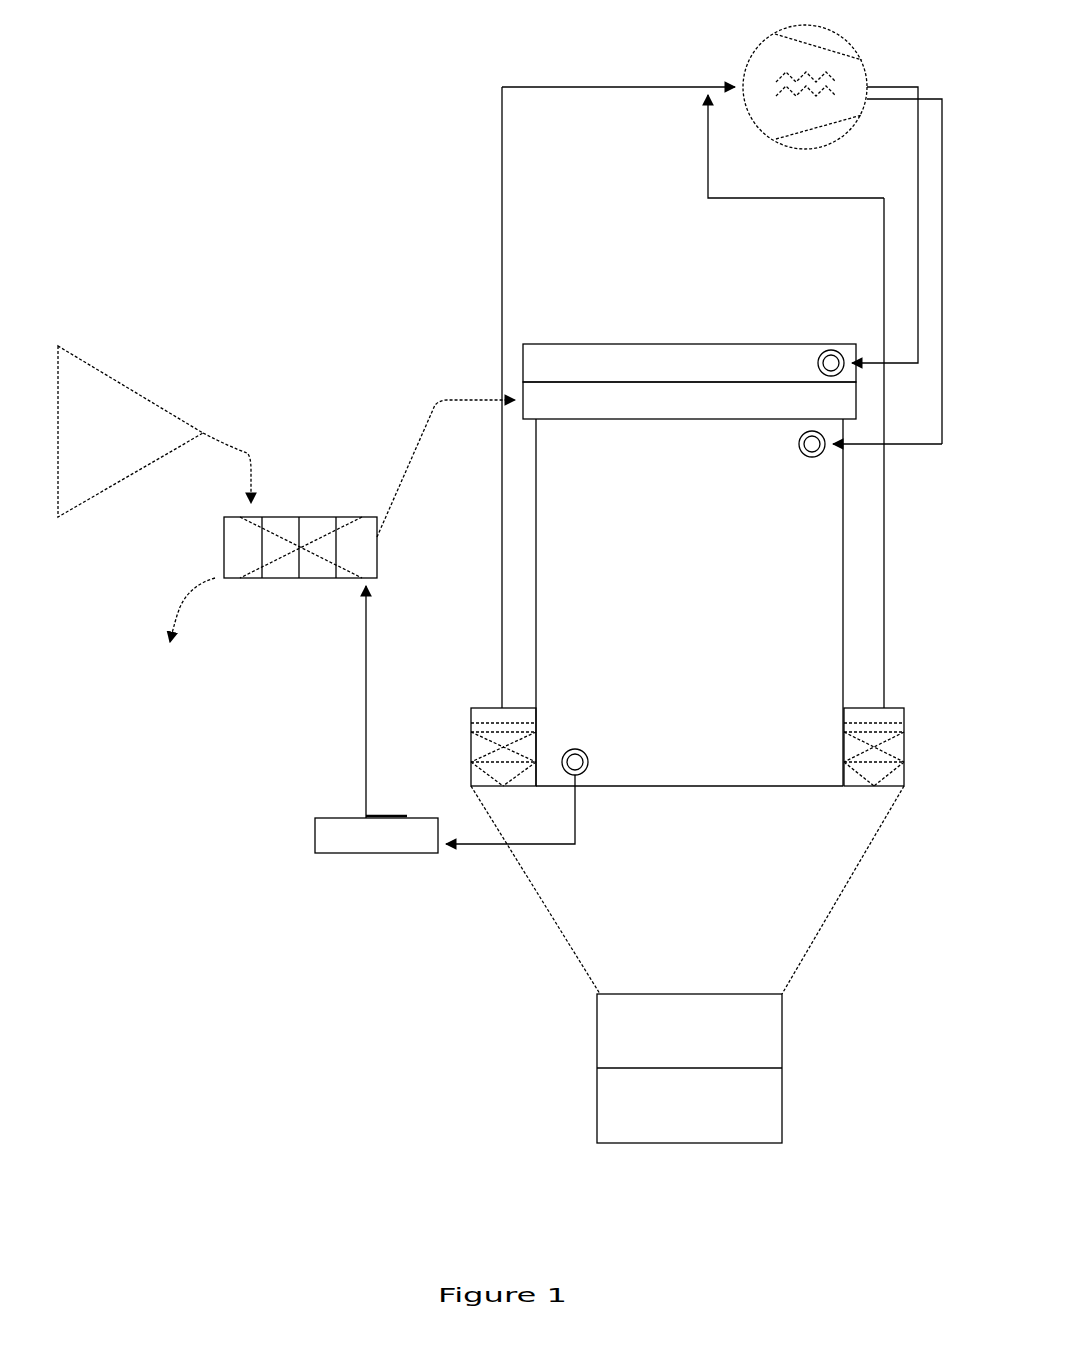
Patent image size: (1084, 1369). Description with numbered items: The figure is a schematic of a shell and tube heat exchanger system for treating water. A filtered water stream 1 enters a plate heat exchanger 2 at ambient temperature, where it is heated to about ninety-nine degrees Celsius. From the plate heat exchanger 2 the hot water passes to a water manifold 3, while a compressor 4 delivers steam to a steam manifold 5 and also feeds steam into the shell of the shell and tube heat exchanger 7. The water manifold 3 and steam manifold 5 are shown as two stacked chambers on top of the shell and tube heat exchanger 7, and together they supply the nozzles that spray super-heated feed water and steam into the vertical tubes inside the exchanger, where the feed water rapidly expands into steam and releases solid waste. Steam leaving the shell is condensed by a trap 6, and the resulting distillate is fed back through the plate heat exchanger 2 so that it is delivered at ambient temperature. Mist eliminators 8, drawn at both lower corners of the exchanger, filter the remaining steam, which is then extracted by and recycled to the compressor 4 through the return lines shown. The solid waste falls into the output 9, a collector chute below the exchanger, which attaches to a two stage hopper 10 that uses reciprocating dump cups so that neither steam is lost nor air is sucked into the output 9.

The filtered water stream 1 is at (154, 431).
The plate heat exchanger 2 is at (342, 521).
The water manifold 3 is at (689, 400).
The compressor 4 is at (722, 234).
The steam manifold 5 is at (720, 240).
The trap 6 is at (376, 719).
The shell and tube heat exchanger 7 is at (739, 602).
The mist eliminators 8 is at (684, 436).
The output 9 is at (675, 871).
The two stage hopper 10 is at (689, 1068).